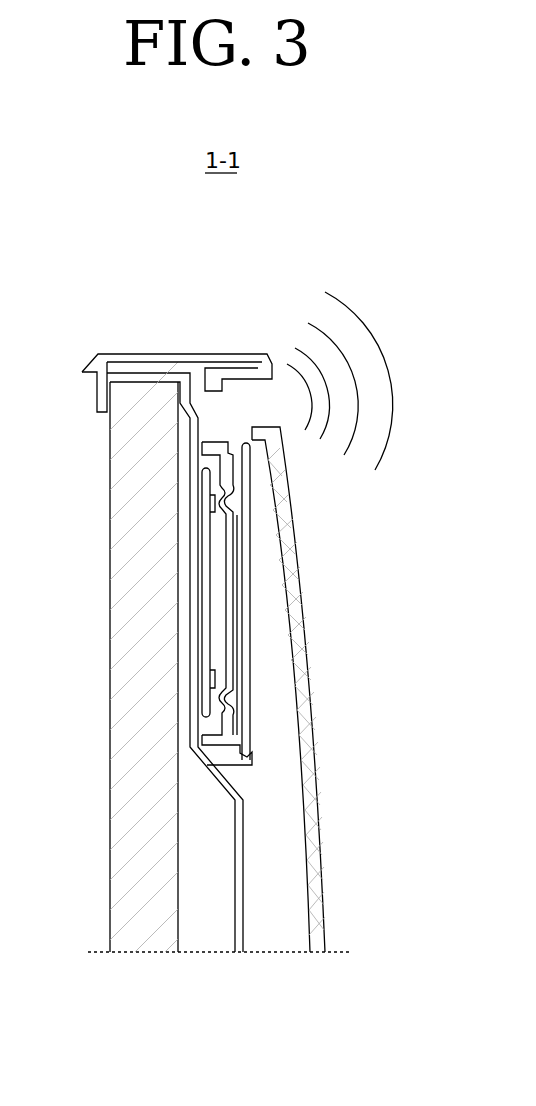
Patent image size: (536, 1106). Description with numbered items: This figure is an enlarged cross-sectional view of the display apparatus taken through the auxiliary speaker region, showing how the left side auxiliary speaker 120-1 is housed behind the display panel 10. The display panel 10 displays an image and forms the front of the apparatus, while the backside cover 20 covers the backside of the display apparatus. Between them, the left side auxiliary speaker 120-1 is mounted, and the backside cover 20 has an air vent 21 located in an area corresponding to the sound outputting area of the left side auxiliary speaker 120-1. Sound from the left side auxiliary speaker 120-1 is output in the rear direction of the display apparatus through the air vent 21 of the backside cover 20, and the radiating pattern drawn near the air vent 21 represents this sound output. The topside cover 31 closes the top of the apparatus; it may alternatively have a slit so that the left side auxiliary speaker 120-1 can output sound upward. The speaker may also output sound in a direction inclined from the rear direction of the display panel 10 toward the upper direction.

The display panel 10 is at (113, 614).
The backside cover 20 is at (312, 689).
The air vent 21 is at (255, 394).
The topside cover 31 is at (126, 353).
The left side auxiliary speaker 120-1 is at (242, 572).